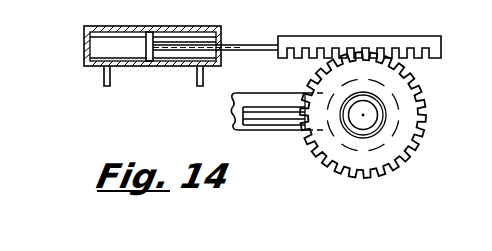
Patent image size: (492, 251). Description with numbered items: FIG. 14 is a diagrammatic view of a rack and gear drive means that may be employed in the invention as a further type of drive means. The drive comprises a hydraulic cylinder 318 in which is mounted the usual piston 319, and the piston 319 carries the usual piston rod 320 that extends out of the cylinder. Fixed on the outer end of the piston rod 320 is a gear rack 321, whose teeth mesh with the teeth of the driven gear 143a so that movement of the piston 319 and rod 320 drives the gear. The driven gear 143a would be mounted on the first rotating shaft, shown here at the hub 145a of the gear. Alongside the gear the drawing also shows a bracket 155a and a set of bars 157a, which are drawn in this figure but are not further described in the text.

The hydraulic cylinder 318 is at (105, 26).
The piston 319 is at (147, 50).
The piston rod 320 is at (244, 44).
The gear rack 321 is at (427, 38).
The driven gear 143a is at (421, 91).
The shaft hub 145a is at (362, 118).
The bracket 155a is at (233, 94).
The bars 157a is at (245, 130).